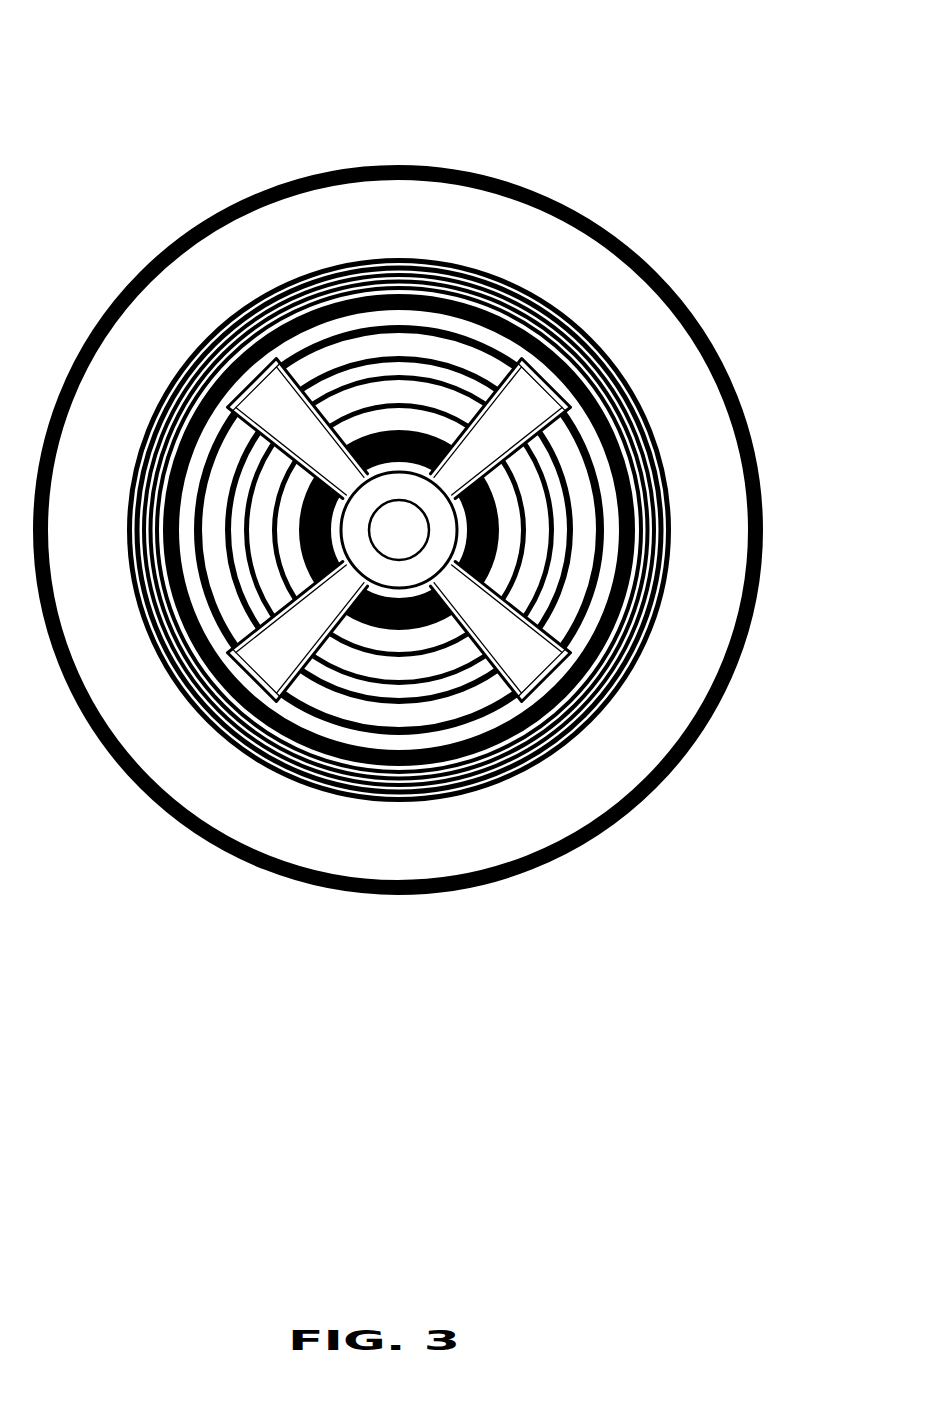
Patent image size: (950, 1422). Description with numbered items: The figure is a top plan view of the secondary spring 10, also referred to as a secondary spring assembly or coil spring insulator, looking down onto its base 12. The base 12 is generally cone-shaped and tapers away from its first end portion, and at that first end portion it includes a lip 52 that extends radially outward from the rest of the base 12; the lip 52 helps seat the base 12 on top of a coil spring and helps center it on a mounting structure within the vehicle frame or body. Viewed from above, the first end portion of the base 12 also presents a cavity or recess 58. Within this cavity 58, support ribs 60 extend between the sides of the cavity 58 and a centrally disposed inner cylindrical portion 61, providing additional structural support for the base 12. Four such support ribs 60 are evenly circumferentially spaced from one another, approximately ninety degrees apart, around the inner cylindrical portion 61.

The secondary spring 10 is at (794, 45).
The base 12 is at (690, 300).
The lip 52 is at (551, 264).
The cavity 58 is at (368, 338).
The support ribs 60 is at (304, 452).
The inner cylindrical portion 61 is at (376, 640).